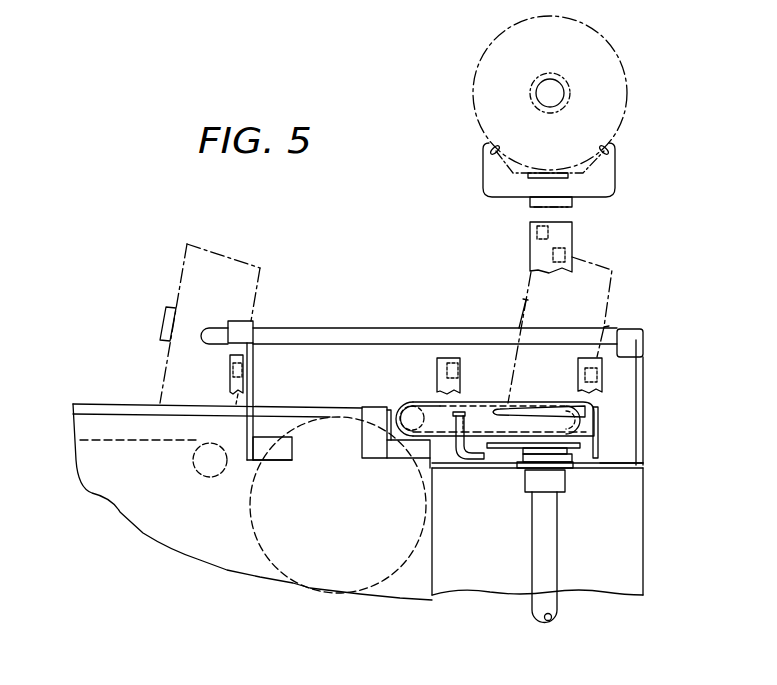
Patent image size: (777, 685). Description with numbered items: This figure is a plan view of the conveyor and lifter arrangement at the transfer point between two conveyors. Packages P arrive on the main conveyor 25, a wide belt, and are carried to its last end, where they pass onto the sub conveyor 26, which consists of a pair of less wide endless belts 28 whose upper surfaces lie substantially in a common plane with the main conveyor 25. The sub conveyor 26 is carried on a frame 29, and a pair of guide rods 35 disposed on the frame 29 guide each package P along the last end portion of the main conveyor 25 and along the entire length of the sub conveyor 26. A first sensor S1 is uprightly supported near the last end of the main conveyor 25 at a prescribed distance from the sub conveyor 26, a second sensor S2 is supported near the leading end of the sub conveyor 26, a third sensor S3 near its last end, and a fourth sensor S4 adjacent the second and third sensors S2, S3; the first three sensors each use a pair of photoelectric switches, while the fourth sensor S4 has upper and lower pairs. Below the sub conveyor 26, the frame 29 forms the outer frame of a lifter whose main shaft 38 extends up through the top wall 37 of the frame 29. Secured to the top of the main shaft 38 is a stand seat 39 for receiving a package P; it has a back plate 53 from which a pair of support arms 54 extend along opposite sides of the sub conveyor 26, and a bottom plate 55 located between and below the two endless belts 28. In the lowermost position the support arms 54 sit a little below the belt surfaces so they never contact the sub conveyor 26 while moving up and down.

The main conveyor 25 is at (108, 403).
The sub conveyor 26 is at (420, 446).
The endless belts 28 is at (397, 403).
The frame 29 is at (630, 537).
The guide rods 35 is at (318, 328).
The top wall 37 is at (457, 470).
The main shaft 38 is at (543, 549).
The stand seat 39 is at (617, 178).
The back plate 53 is at (600, 424).
The support arms 54 is at (508, 408).
The bottom plate 55 is at (583, 455).
The first sensor S1 is at (231, 372).
The second sensor S2 is at (438, 372).
The third sensor S3 is at (605, 382).
The fourth sensor S4 is at (553, 251).
The package P is at (483, 61).